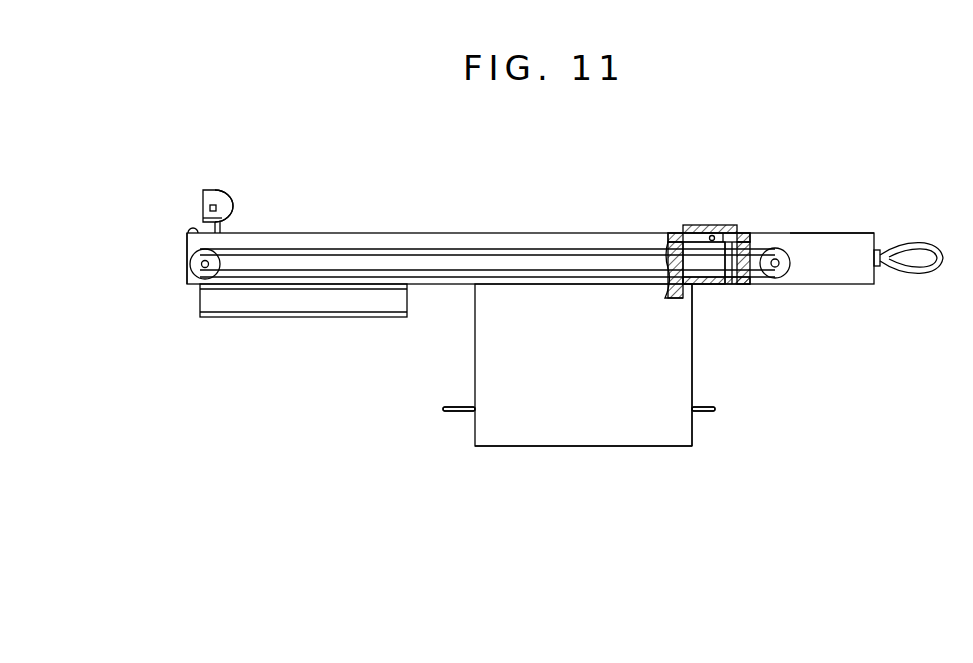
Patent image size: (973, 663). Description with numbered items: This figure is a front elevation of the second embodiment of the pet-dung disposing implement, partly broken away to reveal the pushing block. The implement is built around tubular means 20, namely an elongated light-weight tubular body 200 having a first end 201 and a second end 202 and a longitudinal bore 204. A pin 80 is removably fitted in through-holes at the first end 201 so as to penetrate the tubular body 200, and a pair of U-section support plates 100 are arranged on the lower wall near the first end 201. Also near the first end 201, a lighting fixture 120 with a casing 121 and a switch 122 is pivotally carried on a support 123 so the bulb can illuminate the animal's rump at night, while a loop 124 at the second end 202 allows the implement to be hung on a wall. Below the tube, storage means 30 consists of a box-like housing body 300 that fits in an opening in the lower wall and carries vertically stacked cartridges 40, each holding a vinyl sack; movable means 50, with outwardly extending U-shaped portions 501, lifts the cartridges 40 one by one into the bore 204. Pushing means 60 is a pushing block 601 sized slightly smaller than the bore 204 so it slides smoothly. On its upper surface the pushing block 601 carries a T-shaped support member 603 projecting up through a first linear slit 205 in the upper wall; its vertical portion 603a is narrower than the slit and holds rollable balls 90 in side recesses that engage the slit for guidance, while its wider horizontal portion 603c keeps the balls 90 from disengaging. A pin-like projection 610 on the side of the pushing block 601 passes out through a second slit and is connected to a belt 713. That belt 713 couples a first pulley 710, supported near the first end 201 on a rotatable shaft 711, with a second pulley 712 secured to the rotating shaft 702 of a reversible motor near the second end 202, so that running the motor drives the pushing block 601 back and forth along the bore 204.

The tubular means 20 is at (455, 233).
The belt 713 is at (380, 250).
The tubular body 200 is at (552, 237).
The second end 202 is at (855, 252).
The first pulley 710 is at (197, 261).
The rotatable shaft 711 is at (207, 270).
The second pulley 712 is at (790, 262).
The rotating shaft 702 is at (780, 268).
The lighting fixture 120 is at (209, 188).
The casing 121 is at (226, 196).
The switch 122 is at (218, 208).
The support 123 is at (221, 229).
The first end 201 is at (192, 229).
The pin 80 is at (188, 230).
The support plates 100 is at (273, 307).
The storage means 30 is at (573, 450).
The housing body 300 is at (640, 423).
The movable means 50 is at (455, 418).
The U-shaped portions 501 is at (448, 405).
The pushing means 60 is at (678, 236).
The support member 603 is at (713, 225).
The horizontal portion 603c is at (690, 237).
The vertical portion 603a is at (748, 236).
The ball 90 is at (715, 237).
The first linear slit 205 is at (672, 238).
The longitudinal bore 204 is at (747, 258).
The pushing block 601 is at (708, 265).
The pin-like projection 610 is at (727, 263).
The cartridge 40 is at (673, 287).
The loop 124 is at (927, 242).